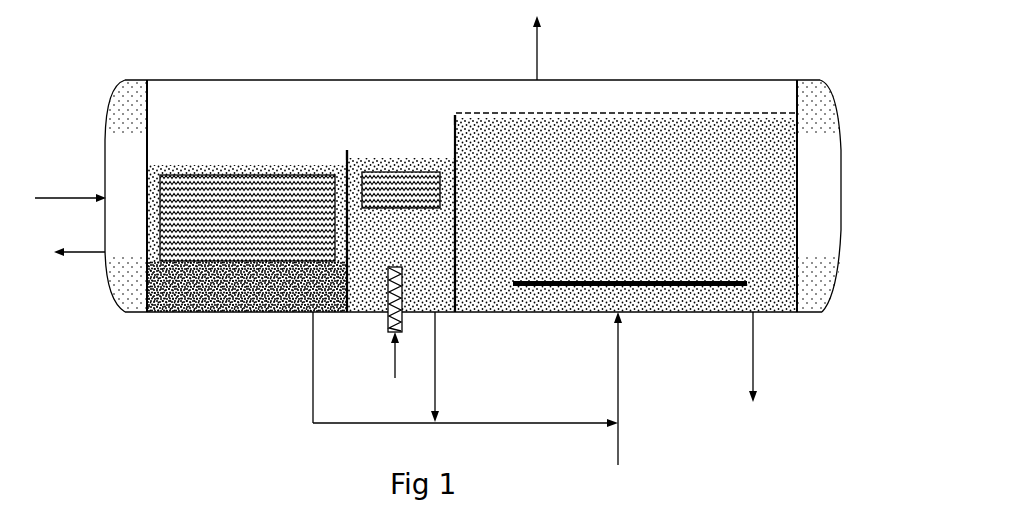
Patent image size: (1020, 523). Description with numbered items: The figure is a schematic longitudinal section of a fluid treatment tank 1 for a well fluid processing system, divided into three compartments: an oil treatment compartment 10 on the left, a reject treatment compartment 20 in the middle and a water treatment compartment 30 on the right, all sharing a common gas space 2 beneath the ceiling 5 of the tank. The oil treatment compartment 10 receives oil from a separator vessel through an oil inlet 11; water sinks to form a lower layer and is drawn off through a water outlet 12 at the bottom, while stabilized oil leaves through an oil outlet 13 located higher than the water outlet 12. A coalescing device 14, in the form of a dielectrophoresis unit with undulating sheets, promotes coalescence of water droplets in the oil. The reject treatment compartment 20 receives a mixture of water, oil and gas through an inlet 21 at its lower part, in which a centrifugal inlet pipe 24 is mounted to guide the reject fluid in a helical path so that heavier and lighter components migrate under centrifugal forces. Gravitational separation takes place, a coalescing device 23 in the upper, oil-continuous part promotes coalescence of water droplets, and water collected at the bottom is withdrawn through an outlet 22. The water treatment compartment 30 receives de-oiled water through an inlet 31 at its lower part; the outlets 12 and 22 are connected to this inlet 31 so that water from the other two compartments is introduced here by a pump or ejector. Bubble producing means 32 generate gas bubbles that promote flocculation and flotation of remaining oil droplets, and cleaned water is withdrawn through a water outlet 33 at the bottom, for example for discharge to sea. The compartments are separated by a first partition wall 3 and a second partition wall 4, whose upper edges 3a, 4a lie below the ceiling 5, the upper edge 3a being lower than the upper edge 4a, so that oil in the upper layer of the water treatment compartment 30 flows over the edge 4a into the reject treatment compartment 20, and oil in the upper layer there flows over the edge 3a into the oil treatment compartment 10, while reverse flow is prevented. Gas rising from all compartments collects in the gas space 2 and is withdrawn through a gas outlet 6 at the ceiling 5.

The fluid treatment tank 1 is at (473, 162).
The common gas space 2 is at (516, 98).
The first partition wall 3 is at (346, 153).
The upper edge of first partition wall 3a is at (347, 150).
The second partition wall 4 is at (455, 120).
The upper edge of second partition wall 4a is at (458, 113).
The ceiling 5 is at (280, 78).
The gas outlet 6 is at (545, 78).
The oil treatment compartment 10 is at (222, 148).
The oil inlet 11 is at (103, 193).
The water outlet 12 is at (313, 317).
The oil outlet 13 is at (105, 258).
The coalescing device 14 is at (263, 185).
The reject treatment compartment 20 is at (385, 130).
The inlet 21 is at (388, 312).
The outlet 22 is at (440, 318).
The coalescing device 23 is at (415, 170).
The centrifugal inlet pipe 24 is at (403, 308).
The water treatment compartment 30 is at (626, 106).
The inlet 31 is at (622, 313).
The bubble producing means 32 is at (703, 285).
The water outlet 33 is at (760, 315).